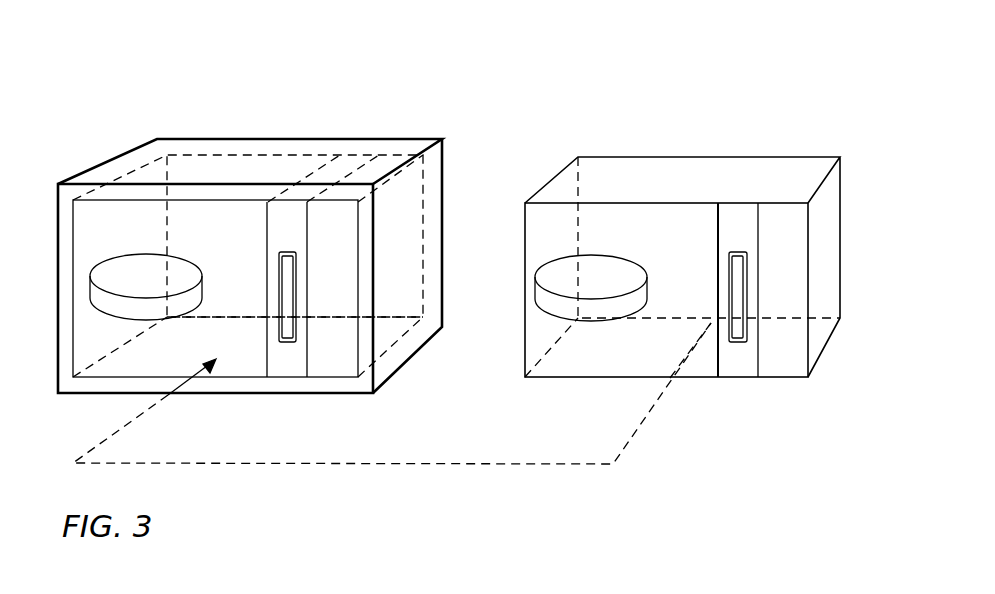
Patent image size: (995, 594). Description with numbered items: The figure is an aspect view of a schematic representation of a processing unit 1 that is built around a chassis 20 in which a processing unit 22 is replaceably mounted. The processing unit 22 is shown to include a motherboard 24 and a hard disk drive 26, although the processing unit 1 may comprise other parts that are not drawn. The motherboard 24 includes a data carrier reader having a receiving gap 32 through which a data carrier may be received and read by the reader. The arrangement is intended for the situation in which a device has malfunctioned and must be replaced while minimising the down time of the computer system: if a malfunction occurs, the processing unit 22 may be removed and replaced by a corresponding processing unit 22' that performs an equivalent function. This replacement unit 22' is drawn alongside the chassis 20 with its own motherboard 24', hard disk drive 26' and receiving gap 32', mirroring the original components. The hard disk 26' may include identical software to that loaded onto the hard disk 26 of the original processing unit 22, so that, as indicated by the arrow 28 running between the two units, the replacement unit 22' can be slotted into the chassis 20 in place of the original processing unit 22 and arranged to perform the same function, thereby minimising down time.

The processing unit 1 is at (443, 113).
The chassis 20 is at (180, 139).
The processing unit 22 is at (248, 300).
The replacement processing unit 22' is at (682, 233).
The motherboard 24 is at (296, 266).
The motherboard of replacement unit 24' is at (711, 290).
The hard disk drive 26 is at (146, 287).
The hard disk drive of replacement unit 26' is at (591, 288).
The arrow 28 is at (413, 463).
The receiving gap 32 is at (313, 297).
The receiving gap of replacement unit 32' is at (766, 297).